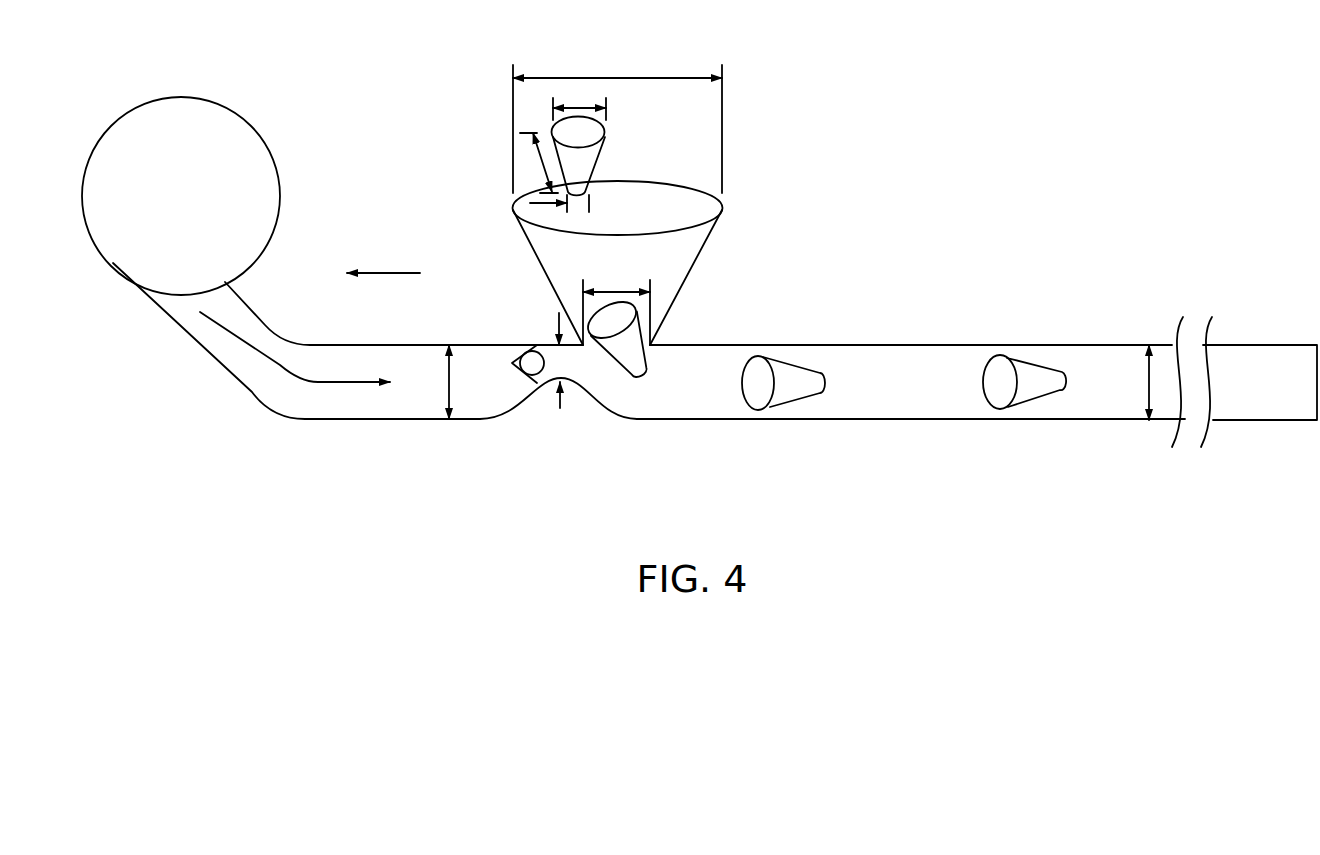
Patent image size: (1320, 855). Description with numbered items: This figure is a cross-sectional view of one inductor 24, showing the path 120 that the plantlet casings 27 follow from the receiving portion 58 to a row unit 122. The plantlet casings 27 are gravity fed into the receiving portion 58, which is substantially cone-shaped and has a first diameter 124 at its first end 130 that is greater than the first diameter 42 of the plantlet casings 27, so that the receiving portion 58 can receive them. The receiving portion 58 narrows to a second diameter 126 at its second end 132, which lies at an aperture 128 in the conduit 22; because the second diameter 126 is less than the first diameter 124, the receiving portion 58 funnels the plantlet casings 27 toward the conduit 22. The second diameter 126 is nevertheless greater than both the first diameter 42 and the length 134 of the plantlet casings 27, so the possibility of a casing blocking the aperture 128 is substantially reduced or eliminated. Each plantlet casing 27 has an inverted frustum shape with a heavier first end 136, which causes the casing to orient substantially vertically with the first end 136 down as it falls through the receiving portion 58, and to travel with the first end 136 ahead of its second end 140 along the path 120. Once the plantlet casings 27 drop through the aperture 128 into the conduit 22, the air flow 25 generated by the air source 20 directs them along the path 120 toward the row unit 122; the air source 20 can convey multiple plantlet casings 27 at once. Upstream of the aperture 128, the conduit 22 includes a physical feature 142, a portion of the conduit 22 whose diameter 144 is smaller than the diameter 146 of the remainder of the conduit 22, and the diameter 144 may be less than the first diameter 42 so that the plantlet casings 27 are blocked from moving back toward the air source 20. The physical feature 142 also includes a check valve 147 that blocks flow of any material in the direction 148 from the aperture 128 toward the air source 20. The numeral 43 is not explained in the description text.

The air source 20 is at (253, 124).
The conduit 22 is at (913, 420).
The inductor 24 is at (372, 90).
The air flow 25 is at (316, 383).
The plantlet casings 27 is at (588, 157).
The first diameter of the plantlet casings 42 is at (578, 107).
The seed tube outlet width 43 is at (589, 203).
The receiving portion 58 is at (675, 192).
The path 120 is at (699, 247).
The row unit 122 is at (1260, 345).
The first diameter of the receiving portion 124 is at (620, 78).
The second diameter of the receiving portion 126 is at (615, 322).
The aperture 128 is at (573, 307).
The first end of the receiving portion 130 is at (727, 203).
The second end of the receiving portion 132 is at (673, 332).
The length of the plantlet casings 134 is at (543, 167).
The first end of the plantlet casings 136 is at (578, 205).
The second end of the plantlet casings 140 is at (585, 137).
The physical feature 142 is at (545, 398).
The diameter of the physical feature 144 is at (561, 404).
The diameter of the conduit 146 is at (442, 378).
The check valve 147 is at (512, 372).
The direction 148 is at (388, 273).